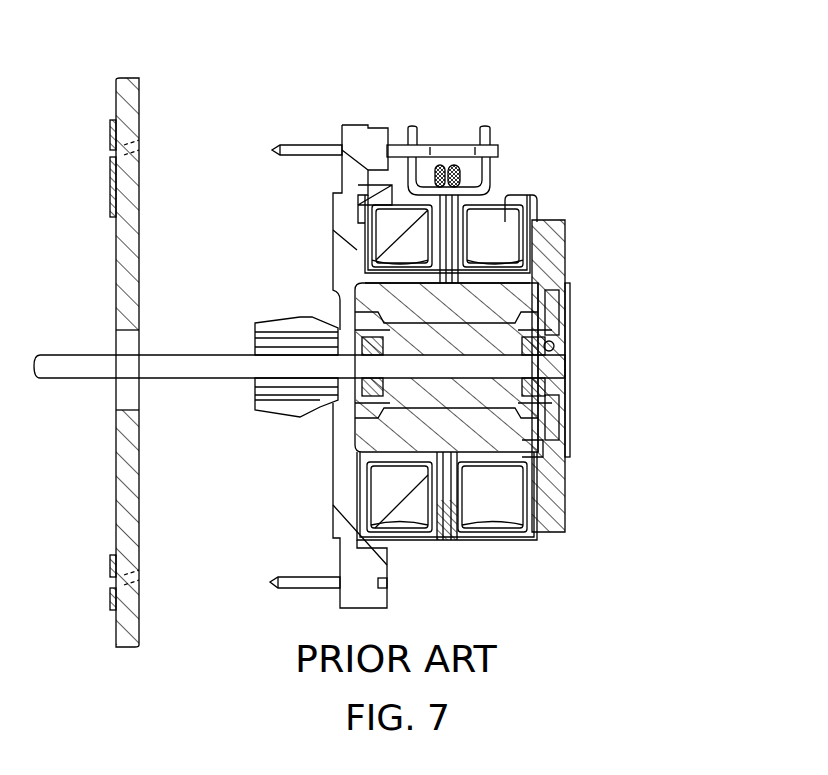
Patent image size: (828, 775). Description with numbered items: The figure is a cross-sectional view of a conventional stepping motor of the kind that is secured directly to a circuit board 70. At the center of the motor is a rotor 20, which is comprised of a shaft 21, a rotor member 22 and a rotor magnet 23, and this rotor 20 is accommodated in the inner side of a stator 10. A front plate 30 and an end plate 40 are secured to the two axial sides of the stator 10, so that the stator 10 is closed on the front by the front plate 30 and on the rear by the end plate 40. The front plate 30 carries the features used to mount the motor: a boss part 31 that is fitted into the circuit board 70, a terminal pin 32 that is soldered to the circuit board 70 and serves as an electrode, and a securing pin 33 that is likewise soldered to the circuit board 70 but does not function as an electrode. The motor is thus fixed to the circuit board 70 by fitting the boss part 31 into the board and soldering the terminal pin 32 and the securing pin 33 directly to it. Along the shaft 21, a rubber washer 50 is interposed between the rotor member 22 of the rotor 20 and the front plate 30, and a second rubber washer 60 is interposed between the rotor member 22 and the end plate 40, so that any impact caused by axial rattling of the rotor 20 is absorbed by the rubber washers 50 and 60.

The stator 10 is at (437, 556).
The rotor 20 is at (624, 390).
The shaft 21 is at (566, 378).
The rotor member 22 is at (540, 425).
The rotor magnet 23 is at (523, 447).
The front plate 30 is at (348, 268).
The boss part 31 is at (262, 405).
The terminal pin 32 is at (310, 145).
The securing pin 33 is at (303, 577).
The end plate 40 is at (548, 252).
The rubber washer 50 is at (365, 388).
The rubber washer 60 is at (565, 350).
The circuit board 70 is at (116, 275).